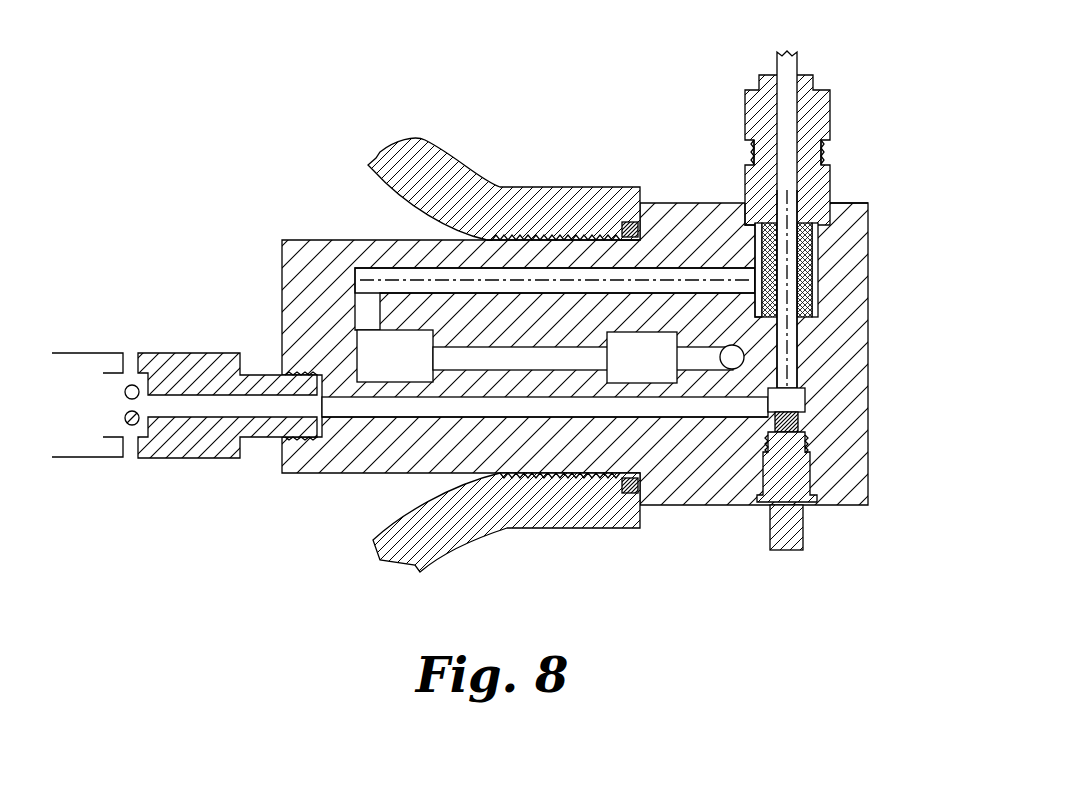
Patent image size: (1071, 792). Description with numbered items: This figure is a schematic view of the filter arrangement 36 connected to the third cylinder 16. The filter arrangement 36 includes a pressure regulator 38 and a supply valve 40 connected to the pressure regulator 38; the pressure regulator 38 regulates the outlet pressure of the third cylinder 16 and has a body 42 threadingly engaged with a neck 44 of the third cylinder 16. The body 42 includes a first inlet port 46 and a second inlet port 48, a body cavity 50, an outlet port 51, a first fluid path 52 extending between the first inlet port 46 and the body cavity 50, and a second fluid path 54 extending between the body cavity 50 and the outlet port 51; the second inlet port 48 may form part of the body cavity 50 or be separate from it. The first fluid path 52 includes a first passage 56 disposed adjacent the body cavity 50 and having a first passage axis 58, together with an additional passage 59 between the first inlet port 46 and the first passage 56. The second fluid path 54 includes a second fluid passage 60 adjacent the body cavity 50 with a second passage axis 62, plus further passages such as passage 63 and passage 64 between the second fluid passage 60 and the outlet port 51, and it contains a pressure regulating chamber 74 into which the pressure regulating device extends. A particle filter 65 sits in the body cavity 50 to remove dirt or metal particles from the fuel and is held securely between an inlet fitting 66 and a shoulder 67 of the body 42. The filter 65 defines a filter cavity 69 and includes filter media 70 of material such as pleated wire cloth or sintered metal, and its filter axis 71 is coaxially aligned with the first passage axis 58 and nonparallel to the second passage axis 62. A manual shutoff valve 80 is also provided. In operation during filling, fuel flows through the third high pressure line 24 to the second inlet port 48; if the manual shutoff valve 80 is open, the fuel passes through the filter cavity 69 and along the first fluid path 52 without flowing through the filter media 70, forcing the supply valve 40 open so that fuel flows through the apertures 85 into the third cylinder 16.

The third cylinder 16 is at (453, 163).
The third high pressure line 24 is at (800, 60).
The filter arrangement 36 is at (506, 335).
The pressure regulator 38 is at (287, 240).
The supply valve 40 is at (224, 445).
The body 42 is at (287, 462).
The neck 44 is at (542, 187).
The first inlet port 46 is at (288, 380).
The second inlet port 48 is at (830, 177).
The body cavity 50 is at (857, 203).
The outlet port 51 is at (733, 369).
The first fluid path 52 is at (417, 407).
The second fluid path 54 is at (520, 276).
The first passage 56 is at (800, 345).
The first passage axis 58 is at (805, 378).
The passage 59 is at (624, 410).
The second fluid passage 60 is at (606, 276).
The second passage axis 62 is at (633, 186).
The passage 63 is at (372, 300).
The passage 64 is at (537, 357).
The particle filter 65 is at (757, 289).
The inlet fitting 66 is at (830, 155).
The shoulder 67 is at (815, 310).
The filter cavity 69 is at (783, 262).
The filter media 70 is at (735, 225).
The filter axis 71 is at (873, 240).
The pressure regulating chamber 74 is at (652, 367).
The manual shutoff valve 80 is at (805, 530).
The apertures 85 is at (123, 415).